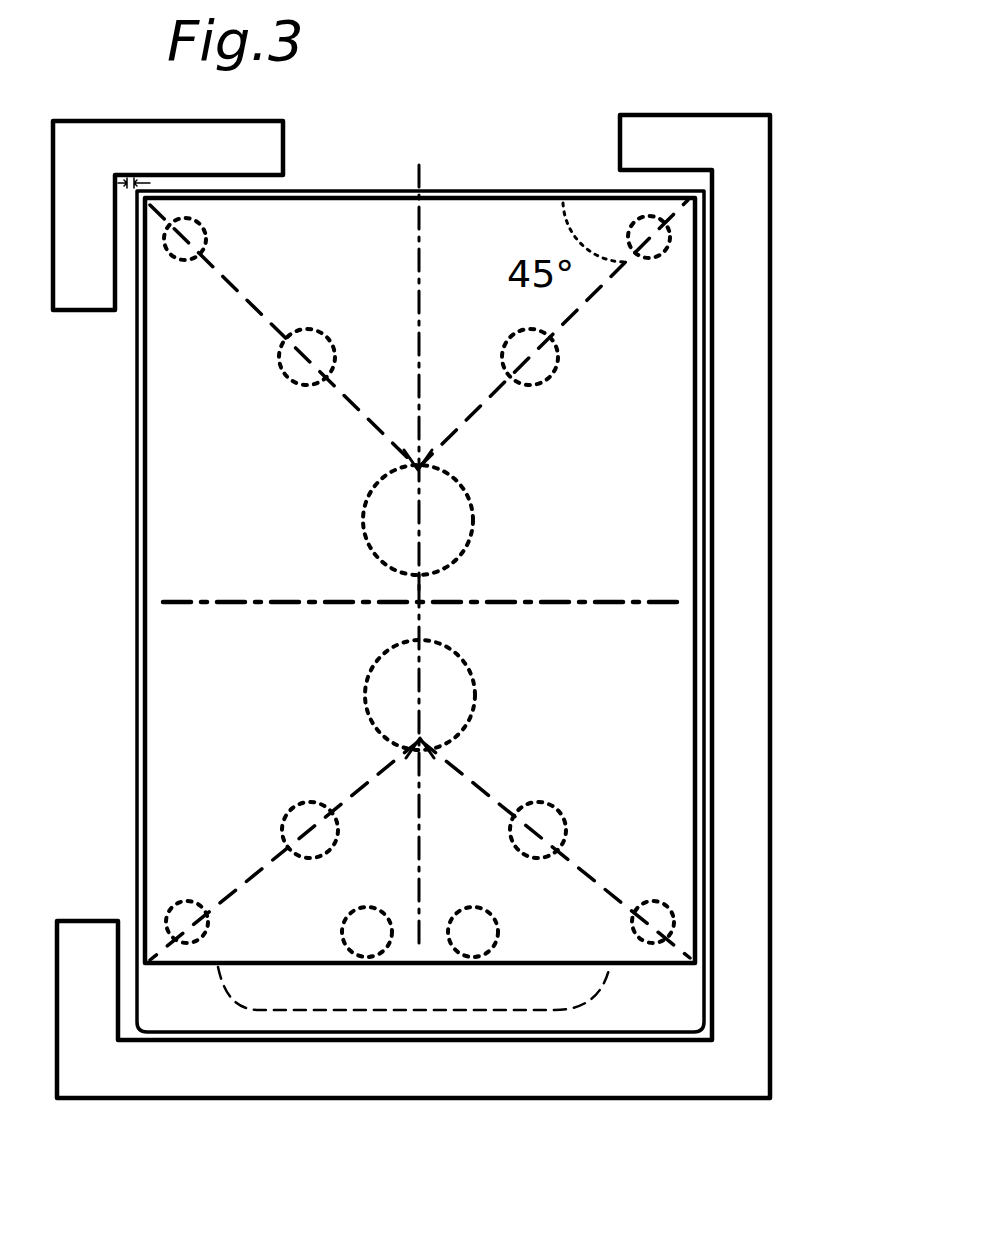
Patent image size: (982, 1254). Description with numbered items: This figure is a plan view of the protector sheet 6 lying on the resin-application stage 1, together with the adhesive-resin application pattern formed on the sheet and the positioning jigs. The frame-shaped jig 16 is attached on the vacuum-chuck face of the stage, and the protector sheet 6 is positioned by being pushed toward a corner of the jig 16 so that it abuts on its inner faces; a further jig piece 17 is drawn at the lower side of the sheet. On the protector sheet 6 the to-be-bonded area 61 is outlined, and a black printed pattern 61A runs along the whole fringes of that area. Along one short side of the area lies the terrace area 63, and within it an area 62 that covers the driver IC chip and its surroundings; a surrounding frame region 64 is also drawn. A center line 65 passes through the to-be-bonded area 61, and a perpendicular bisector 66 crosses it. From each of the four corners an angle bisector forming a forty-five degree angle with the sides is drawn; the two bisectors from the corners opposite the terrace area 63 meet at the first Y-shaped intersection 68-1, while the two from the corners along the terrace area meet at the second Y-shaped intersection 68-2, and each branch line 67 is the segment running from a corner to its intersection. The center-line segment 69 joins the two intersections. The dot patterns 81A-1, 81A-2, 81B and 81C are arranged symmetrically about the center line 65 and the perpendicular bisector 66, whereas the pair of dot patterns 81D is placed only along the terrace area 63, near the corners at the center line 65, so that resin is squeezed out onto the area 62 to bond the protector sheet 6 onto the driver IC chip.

The resin-application stage 1 is at (852, 572).
The protector sheet 6 is at (108, 392).
The frame-shaped jig 16 is at (185, 135).
The mounting bracket 17 is at (402, 147).
The to-be-bonded area 61 is at (140, 505).
The black printed pattern 61A is at (137, 180).
The area covering driver IC chip 62 is at (575, 1008).
The terrace area 63 is at (667, 1002).
The frame 64 is at (140, 680).
The center line 65 is at (420, 172).
The perpendicular bisector 66 is at (140, 603).
The branch line 67 is at (590, 297).
The first Y-shaped intersection 68-1 is at (427, 466).
The second Y-shaped intersection 68-2 is at (420, 741).
The center-line segment 69 is at (415, 585).
The dot pattern 81A-1 is at (467, 500).
The dot pattern 81A-2 is at (467, 675).
The dot pattern 81B is at (545, 805).
The dot pattern 81C is at (667, 903).
The dot pattern 81D is at (497, 922).